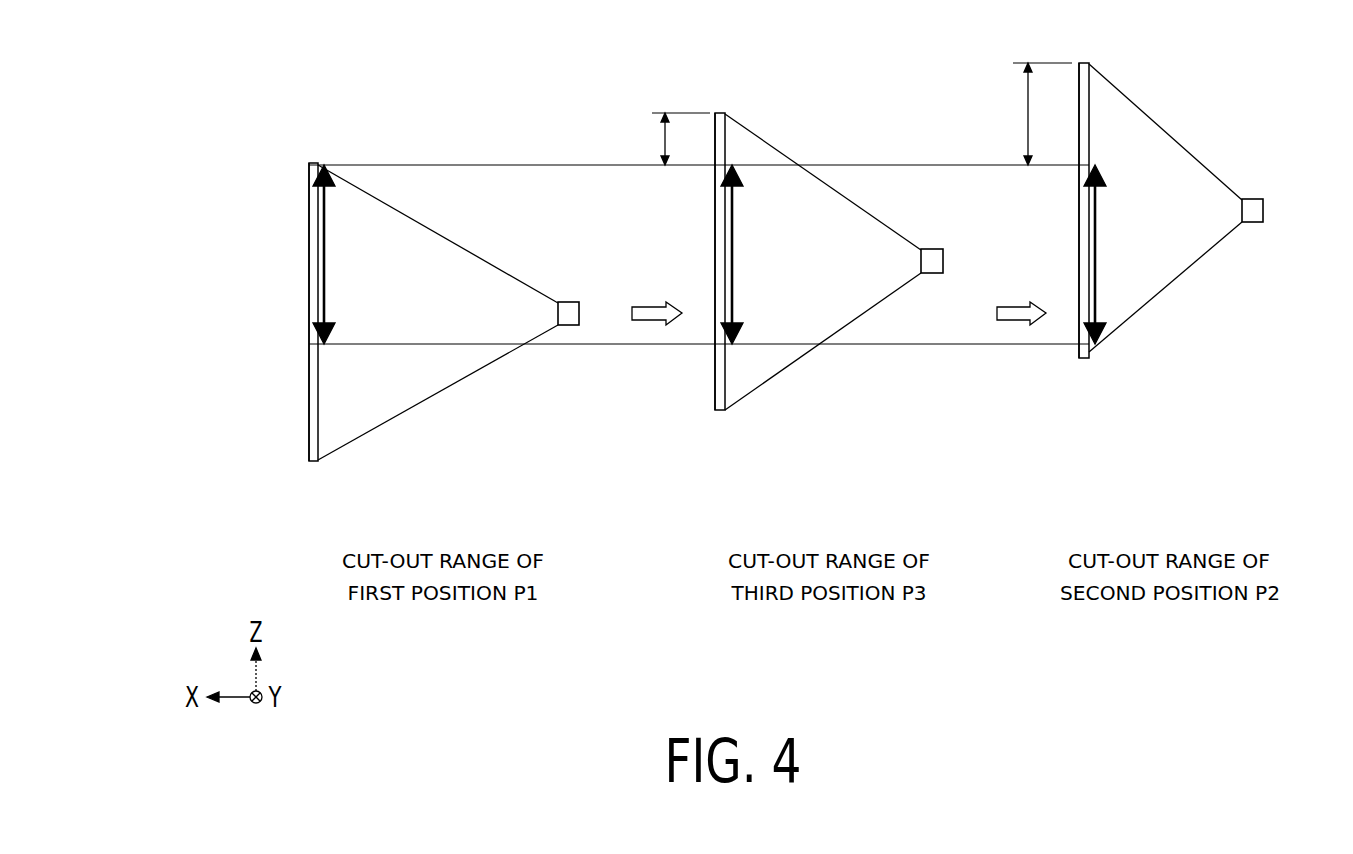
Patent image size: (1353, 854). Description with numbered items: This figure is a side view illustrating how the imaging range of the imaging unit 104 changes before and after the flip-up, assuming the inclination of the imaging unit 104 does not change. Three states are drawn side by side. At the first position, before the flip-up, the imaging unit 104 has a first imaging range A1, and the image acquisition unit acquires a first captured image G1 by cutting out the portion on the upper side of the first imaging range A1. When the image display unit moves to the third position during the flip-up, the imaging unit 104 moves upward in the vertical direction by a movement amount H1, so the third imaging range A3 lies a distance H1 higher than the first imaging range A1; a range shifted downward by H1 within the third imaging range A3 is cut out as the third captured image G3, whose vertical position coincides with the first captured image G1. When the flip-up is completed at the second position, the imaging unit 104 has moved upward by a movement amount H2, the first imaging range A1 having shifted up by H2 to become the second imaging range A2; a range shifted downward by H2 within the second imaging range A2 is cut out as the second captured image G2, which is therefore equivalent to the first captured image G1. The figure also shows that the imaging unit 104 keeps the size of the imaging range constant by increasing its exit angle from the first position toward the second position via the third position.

The imaging unit 104 is at (568, 325).
The first captured image G1 is at (325, 228).
The second captured image G2 is at (1097, 208).
The third captured image G3 is at (733, 205).
The first imaging range A1 is at (318, 400).
The second imaging range A2 is at (1092, 350).
The third imaging range A3 is at (725, 380).
The movement amount to third position H1 is at (669, 139).
The movement amount to second position H2 is at (1031, 114).